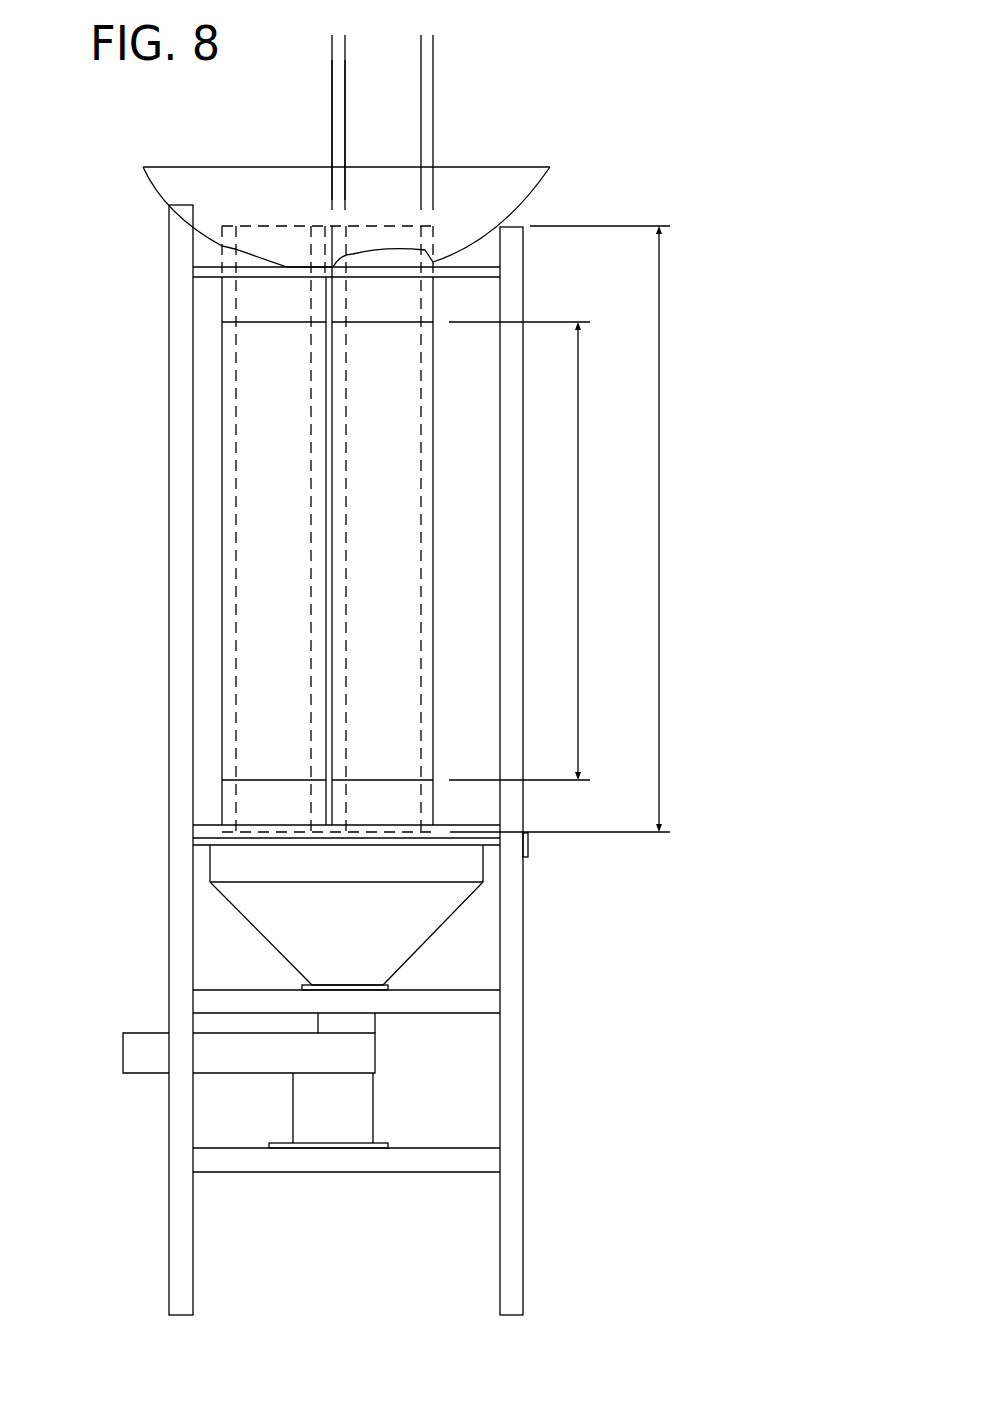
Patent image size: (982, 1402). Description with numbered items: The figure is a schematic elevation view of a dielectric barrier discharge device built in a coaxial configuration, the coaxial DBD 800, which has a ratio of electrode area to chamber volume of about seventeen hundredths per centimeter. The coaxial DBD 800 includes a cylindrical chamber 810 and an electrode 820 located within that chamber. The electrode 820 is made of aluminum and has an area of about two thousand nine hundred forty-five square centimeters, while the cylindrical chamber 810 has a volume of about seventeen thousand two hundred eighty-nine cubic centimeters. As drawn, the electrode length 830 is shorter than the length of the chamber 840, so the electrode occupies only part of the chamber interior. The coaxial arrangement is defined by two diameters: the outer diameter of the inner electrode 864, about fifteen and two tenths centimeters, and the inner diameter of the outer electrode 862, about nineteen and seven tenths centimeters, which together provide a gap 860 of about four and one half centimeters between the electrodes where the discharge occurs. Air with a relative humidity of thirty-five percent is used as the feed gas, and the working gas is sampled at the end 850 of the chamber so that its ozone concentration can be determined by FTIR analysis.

The coaxial DBD 800 is at (674, 110).
The cylindrical chamber 810 is at (437, 297).
The electrode 820 is at (433, 353).
The electrode length 830 is at (578, 598).
The length of the chamber 840 is at (659, 533).
The end of the chamber 850 is at (360, 860).
The gap 860 is at (388, 48).
The inner diameter of the outer electrode 862 is at (300, 87).
The outer diameter of the inner electrode 864 is at (313, 130).